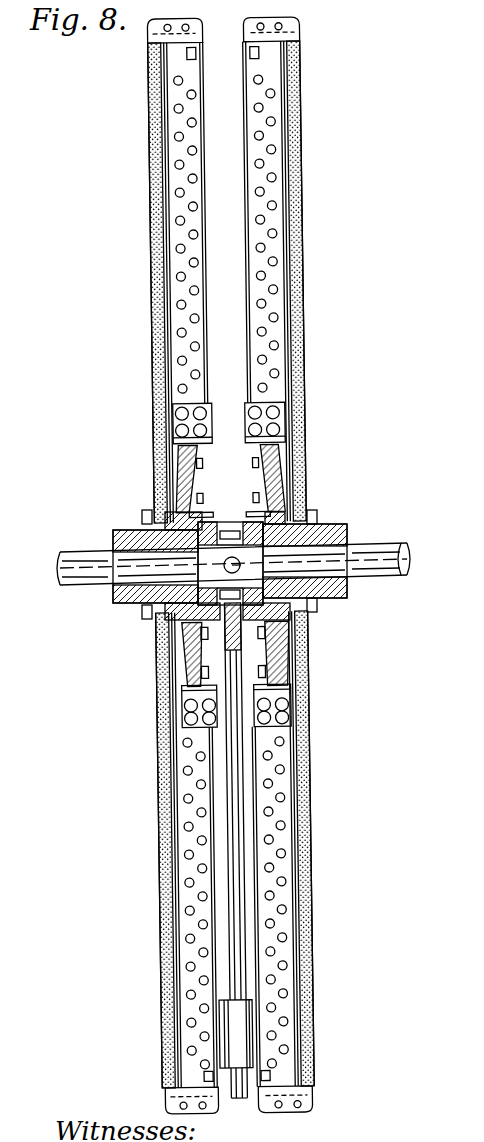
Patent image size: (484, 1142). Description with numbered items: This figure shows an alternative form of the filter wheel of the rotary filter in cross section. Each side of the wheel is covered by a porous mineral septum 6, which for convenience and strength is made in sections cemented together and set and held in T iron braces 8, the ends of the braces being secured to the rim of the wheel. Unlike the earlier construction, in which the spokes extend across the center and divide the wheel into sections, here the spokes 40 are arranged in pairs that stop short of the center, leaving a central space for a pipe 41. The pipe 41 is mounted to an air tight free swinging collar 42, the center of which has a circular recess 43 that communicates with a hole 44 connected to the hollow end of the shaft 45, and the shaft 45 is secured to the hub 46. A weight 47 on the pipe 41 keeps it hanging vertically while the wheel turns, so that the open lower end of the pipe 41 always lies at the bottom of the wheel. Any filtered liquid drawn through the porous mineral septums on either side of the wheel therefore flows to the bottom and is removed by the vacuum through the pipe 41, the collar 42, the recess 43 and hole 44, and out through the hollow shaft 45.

The porous mineral septum 6 is at (303, 400).
The T iron braces 8 is at (297, 133).
The spokes 40 is at (274, 233).
The pipe 41 is at (240, 880).
The air tight free swinging collar 42 is at (235, 528).
The circular recess 43 is at (268, 497).
The hole 44 is at (240, 562).
The shaft 45 is at (386, 546).
The hub 46 is at (348, 528).
The weight 47 is at (252, 1048).